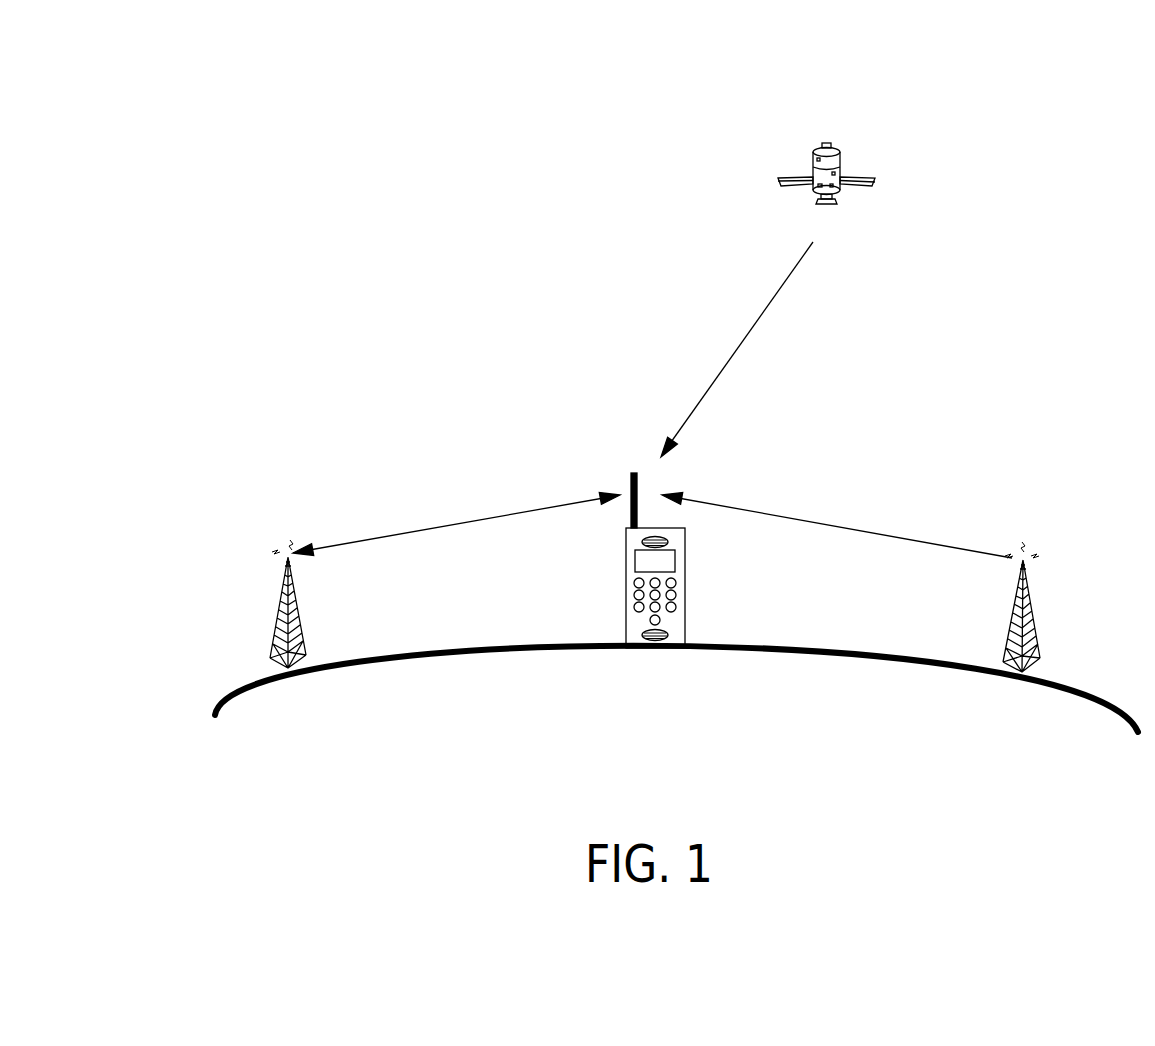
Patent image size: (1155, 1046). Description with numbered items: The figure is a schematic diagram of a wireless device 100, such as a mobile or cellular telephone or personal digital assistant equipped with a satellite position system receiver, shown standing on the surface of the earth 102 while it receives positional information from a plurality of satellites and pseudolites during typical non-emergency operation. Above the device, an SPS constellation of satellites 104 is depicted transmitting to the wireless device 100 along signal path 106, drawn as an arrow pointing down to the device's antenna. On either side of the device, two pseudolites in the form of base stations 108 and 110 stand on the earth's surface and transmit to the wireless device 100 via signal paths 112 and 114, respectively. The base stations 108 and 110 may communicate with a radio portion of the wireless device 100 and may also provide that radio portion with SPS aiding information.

The wireless device 100 is at (688, 605).
The surface of the earth 102 is at (523, 652).
The SPS constellation of satellites 104 is at (827, 143).
The signal path 106 is at (753, 327).
The base station 108 is at (1041, 658).
The base station 110 is at (268, 656).
The signal path 112 is at (925, 548).
The signal path 114 is at (348, 547).